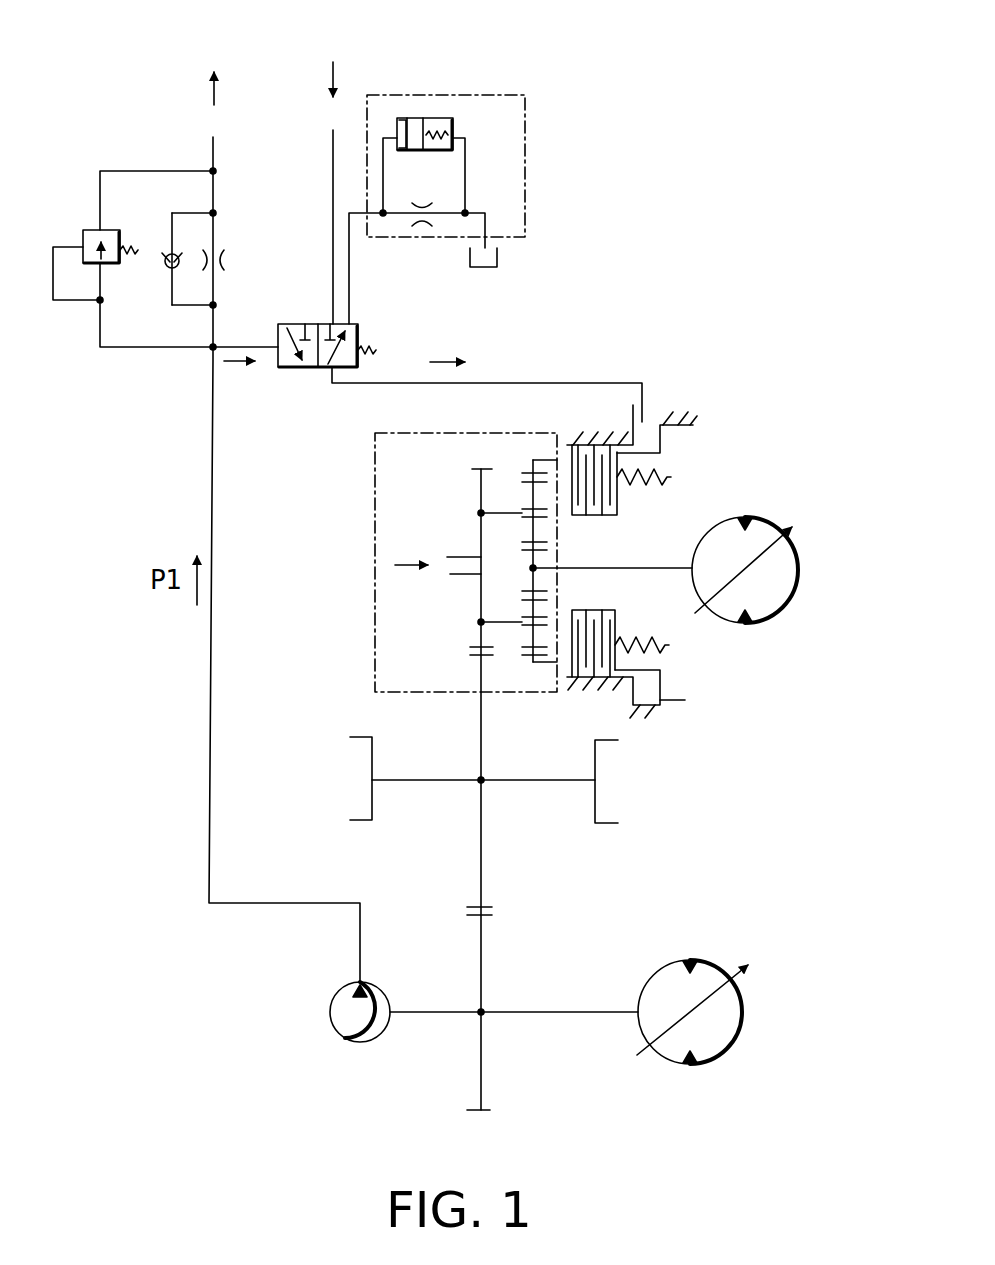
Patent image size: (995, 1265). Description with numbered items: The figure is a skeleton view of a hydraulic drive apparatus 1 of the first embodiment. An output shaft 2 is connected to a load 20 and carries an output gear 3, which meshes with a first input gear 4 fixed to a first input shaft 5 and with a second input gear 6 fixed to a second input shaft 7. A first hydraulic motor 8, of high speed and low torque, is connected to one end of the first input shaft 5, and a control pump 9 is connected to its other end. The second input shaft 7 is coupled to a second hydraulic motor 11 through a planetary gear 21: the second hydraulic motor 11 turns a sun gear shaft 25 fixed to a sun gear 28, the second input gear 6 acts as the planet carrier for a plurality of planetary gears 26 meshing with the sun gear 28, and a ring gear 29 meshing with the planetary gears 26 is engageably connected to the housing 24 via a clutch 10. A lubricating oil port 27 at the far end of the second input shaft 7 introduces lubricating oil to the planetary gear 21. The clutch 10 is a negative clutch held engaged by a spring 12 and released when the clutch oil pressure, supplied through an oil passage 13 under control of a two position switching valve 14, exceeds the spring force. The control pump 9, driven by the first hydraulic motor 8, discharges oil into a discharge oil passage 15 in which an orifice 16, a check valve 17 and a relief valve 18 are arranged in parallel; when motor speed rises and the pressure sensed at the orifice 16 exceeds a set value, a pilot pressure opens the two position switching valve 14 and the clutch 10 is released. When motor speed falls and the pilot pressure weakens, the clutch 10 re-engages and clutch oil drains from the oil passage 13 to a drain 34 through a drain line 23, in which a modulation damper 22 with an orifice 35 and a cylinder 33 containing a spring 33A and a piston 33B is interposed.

The hydraulic drive apparatus 1 is at (715, 296).
The output shaft 2 is at (528, 778).
The output gear 3 is at (483, 841).
The first input gear 4 is at (483, 969).
The first input shaft 5 is at (578, 1015).
The second input gear 6 is at (478, 471).
The second input shaft 7 is at (462, 555).
The first hydraulic motor 8 is at (742, 1012).
The control pump 9 is at (342, 990).
The clutch 10 is at (605, 517).
The second hydraulic motor 11 is at (800, 575).
The spring 12 is at (675, 477).
The oil passage 13 is at (530, 382).
The two position switching valve 14 is at (307, 371).
The discharge oil passage 15 is at (212, 650).
The orifice 16 is at (228, 262).
The check valve 17 is at (164, 253).
The relief valve 18 is at (90, 224).
The load 20 is at (598, 800).
The planetary gear 21 is at (372, 490).
The modulation damper 22 is at (526, 143).
The drain line 23 is at (350, 302).
The housing 24 is at (597, 440).
The sun gear shaft 25 is at (688, 560).
The planetary gears 26 is at (525, 490).
The lubricating oil port 27 is at (450, 576).
The sun gear 28 is at (548, 565).
The ring gear 29 is at (548, 456).
The cylinder 33 is at (440, 118).
The spring 33A is at (450, 128).
The piston 33B is at (408, 117).
The drain 34 is at (500, 257).
The orifice 35 is at (421, 226).